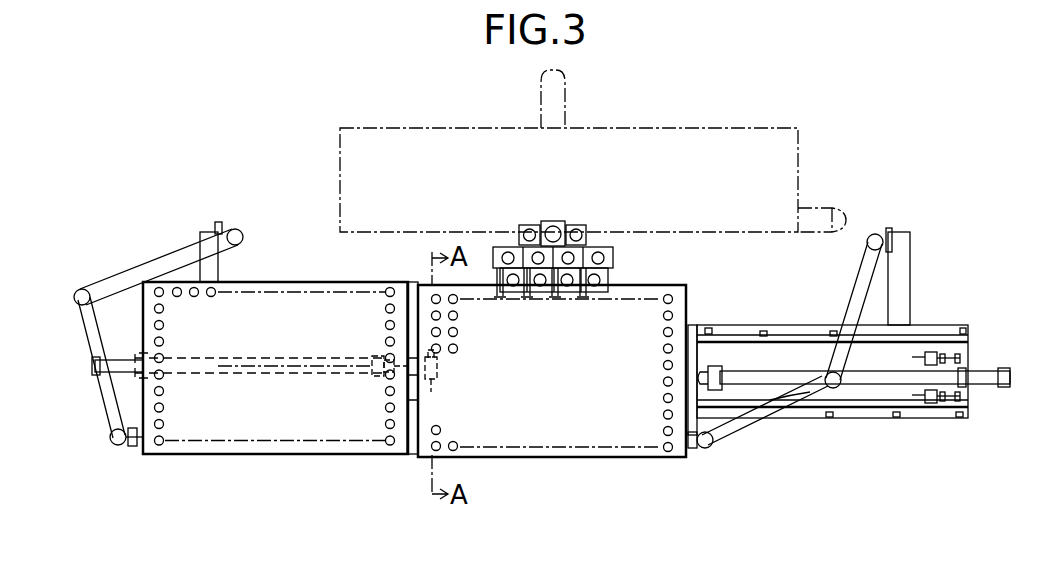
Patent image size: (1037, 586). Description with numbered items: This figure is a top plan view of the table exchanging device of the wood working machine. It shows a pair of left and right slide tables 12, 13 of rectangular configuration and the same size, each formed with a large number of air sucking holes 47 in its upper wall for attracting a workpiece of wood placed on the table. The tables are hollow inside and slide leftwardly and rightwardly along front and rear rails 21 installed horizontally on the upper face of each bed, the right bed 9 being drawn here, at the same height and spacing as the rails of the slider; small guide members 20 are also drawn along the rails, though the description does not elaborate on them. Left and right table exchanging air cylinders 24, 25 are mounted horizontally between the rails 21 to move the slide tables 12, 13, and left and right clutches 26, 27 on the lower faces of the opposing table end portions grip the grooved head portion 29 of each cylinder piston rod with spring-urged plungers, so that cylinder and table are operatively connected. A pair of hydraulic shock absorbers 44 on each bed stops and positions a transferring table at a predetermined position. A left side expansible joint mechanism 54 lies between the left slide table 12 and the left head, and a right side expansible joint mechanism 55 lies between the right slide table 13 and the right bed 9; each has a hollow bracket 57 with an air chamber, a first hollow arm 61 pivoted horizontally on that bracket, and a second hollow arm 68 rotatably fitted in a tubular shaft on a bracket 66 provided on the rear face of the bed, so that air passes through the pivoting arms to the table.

The right bed 9 is at (770, 392).
The left side slide table 12 is at (286, 432).
The right side slide table 13 is at (530, 435).
The guide rail 20 is at (830, 332).
The front and rear rails 21 is at (920, 338).
The left side table exchanging air cylinder 24 is at (216, 372).
The right side table exchanging air cylinder 25 is at (898, 422).
The left side clutch 26 is at (380, 378).
The right side clutch 27 is at (413, 380).
The head portion 29 is at (718, 448).
The hydraulic shock absorbers 44 is at (970, 378).
The air sucking holes 47 is at (196, 298).
The left side expansible joint mechanism 54 is at (72, 326).
The right side expansible joint mechanism 55 is at (812, 402).
The hollow bracket 57 is at (130, 442).
The first hollow arm 61 is at (105, 388).
The bracket 66 is at (210, 268).
The second hollow arm 68 is at (140, 270).